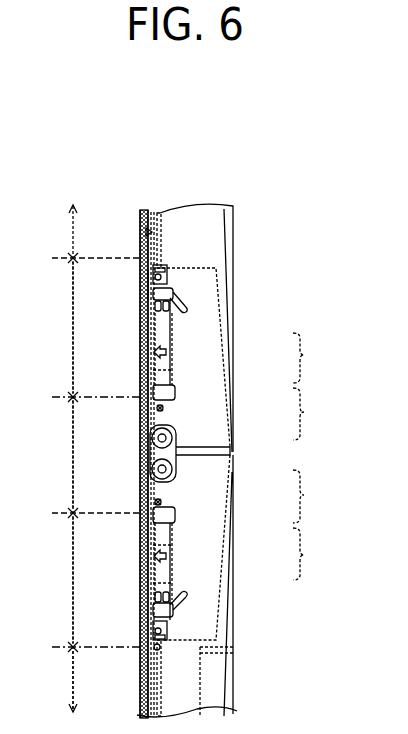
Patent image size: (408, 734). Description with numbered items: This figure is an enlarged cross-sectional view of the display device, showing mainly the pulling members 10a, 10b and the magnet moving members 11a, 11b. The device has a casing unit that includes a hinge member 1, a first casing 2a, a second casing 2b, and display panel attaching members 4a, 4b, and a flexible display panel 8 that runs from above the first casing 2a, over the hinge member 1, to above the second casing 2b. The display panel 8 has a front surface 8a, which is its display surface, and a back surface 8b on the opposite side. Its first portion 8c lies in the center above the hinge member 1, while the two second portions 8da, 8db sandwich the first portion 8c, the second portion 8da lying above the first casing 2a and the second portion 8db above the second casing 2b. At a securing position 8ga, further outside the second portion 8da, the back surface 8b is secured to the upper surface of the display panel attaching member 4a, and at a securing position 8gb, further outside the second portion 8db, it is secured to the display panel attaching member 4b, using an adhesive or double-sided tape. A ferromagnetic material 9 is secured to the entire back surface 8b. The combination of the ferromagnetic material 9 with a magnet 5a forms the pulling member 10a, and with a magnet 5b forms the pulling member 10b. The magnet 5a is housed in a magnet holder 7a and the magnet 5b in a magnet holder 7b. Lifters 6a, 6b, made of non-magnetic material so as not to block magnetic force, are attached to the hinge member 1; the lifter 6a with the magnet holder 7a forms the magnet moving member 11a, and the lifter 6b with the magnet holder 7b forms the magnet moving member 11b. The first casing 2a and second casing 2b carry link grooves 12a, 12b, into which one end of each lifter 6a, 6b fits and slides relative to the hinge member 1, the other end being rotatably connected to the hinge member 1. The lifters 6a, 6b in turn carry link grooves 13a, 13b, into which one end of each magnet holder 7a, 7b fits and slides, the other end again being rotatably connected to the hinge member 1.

The hinge member 1 is at (152, 452).
The first casing 2a is at (213, 219).
The second casing 2b is at (213, 667).
The display panel attaching member 4a is at (163, 256).
The display panel attaching member 4b is at (158, 697).
The magnet 5a is at (176, 395).
The magnet 5b is at (176, 515).
The lifter 6a is at (173, 372).
The lifter 6b is at (173, 545).
The magnet holder 7a is at (172, 350).
The magnet holder 7b is at (173, 583).
The display panel 8 is at (146, 210).
The front surface 8a is at (150, 282).
The back surface 8b is at (146, 232).
The first portion 8c is at (59, 454).
The second portion 8da is at (53, 327).
The second portion 8db is at (53, 580).
The securing position 8ga is at (86, 458).
The securing position 8gb is at (53, 680).
The ferromagnetic material 9 is at (165, 413).
The pulling member 10a is at (304, 412).
The pulling member 10b is at (304, 495).
The magnet moving member 11a is at (304, 355).
The magnet moving member 11b is at (304, 555).
The link groove 12a is at (186, 300).
The link groove 12b is at (168, 635).
The link groove 13a is at (175, 317).
The link groove 13b is at (185, 603).